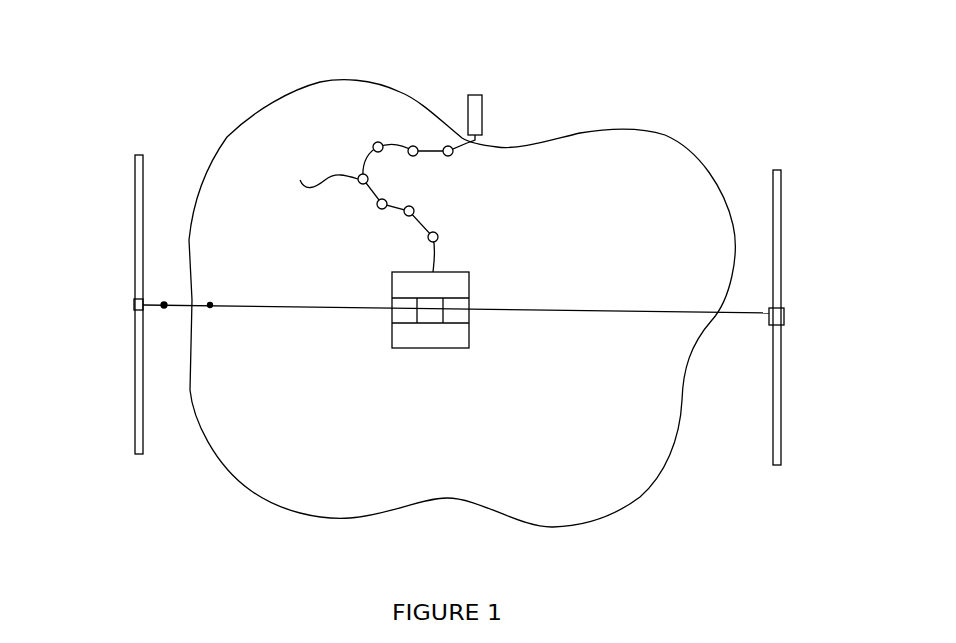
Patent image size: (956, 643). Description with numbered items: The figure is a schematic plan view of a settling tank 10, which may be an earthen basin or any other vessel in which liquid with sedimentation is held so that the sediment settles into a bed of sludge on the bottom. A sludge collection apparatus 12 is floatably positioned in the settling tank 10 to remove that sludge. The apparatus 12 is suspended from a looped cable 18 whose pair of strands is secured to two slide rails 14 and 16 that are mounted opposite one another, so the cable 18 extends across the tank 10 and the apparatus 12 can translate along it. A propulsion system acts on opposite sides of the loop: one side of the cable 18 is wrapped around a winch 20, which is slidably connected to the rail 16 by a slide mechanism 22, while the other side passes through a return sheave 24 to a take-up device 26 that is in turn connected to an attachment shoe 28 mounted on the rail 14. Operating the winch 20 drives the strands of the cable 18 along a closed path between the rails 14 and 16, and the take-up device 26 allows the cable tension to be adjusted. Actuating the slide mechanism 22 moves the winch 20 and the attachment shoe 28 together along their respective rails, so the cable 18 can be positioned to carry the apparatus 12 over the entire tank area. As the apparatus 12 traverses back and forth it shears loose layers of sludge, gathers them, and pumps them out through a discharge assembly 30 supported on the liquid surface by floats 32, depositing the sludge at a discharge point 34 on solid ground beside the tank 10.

The settling tank 10 is at (275, 72).
The sludge collection apparatus 12 is at (435, 360).
The slide rail 14 is at (135, 193).
The slide rail 16 is at (782, 207).
The looped cable 18 is at (598, 313).
The winch 20 is at (784, 302).
The slide mechanism 22 is at (783, 331).
The return sheave 24 is at (208, 306).
The take-up device 26 is at (166, 303).
The attachment shoe 28 is at (133, 302).
The discharge assembly 30 is at (451, 156).
The floats 32 is at (315, 177).
The discharge point 34 is at (482, 118).